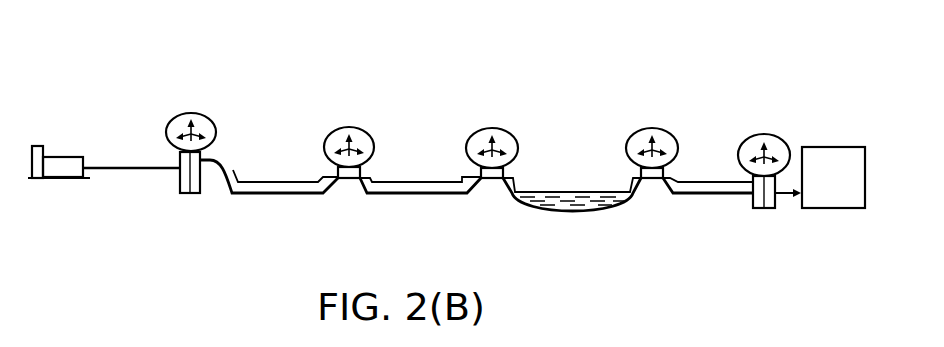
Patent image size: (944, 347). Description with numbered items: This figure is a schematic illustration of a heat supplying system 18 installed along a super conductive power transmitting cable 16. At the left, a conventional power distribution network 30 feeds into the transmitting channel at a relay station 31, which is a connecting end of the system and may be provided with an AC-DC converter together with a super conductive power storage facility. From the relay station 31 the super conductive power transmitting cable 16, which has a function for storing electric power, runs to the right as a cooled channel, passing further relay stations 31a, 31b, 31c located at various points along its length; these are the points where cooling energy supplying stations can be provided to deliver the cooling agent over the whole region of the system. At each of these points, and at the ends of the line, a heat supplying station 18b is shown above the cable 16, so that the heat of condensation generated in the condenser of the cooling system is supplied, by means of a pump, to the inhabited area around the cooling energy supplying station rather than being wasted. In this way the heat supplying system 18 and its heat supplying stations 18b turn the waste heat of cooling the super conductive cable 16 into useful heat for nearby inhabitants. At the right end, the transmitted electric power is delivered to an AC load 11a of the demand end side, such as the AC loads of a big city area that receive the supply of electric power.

The power distribution network 30 is at (122, 166).
The relay station 31 is at (178, 157).
The relay station 31a is at (372, 170).
The relay station 31b is at (510, 170).
The relay station 31c is at (670, 170).
The super conductive power transmitting cable 16 is at (288, 197).
The heat supplying system 18 is at (352, 119).
The heat supplying station 18b is at (208, 118).
The AC load 11a is at (840, 210).